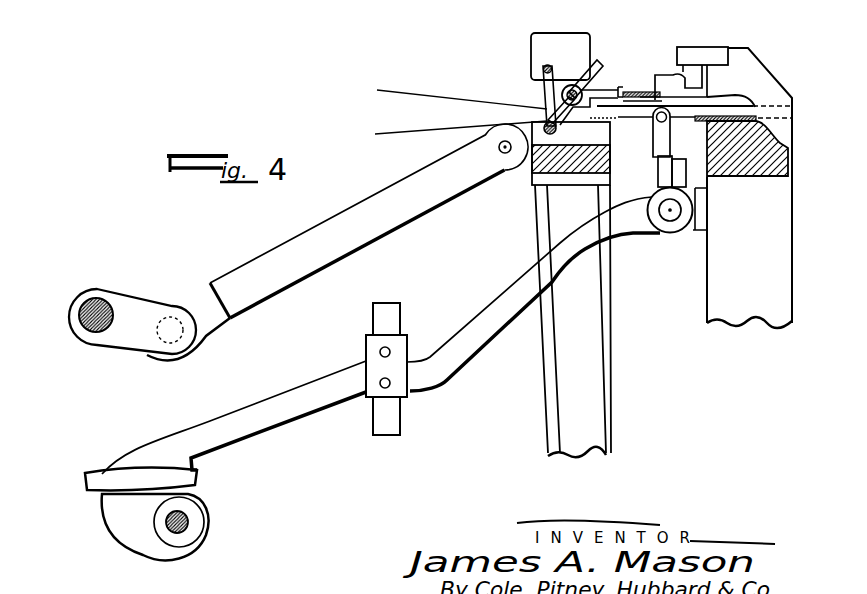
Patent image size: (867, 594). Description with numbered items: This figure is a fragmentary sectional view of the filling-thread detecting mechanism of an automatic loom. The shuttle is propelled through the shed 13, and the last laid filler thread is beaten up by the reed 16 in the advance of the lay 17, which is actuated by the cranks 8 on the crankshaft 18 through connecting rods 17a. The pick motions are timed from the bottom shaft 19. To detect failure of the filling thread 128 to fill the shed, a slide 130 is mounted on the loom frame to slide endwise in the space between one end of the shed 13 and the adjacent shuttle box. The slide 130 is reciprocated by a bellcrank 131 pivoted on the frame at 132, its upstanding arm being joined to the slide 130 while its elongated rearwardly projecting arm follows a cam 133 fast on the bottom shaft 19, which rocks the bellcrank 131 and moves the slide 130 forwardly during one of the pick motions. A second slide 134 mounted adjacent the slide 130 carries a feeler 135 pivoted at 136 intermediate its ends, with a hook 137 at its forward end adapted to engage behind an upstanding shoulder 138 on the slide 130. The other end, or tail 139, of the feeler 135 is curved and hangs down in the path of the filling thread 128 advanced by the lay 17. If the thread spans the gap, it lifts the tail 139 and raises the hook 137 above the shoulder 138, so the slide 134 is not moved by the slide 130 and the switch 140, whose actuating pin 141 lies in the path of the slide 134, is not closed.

The cranks 8 is at (142, 306).
The shed 13 is at (377, 124).
The reed 16 is at (545, 88).
The lay 17 is at (538, 211).
The connecting rods 17a is at (408, 218).
The crankshaft 18 is at (98, 333).
The bottom shaft 19 is at (190, 522).
The filling thread 128 is at (542, 123).
The slide 130 is at (637, 114).
The bellcrank 131 is at (634, 229).
The pivot 132 is at (671, 216).
The cam 133 is at (127, 535).
The second slide 134 is at (582, 111).
The feeler 135 is at (560, 56).
The pivot 136 is at (572, 85).
The hook 137 is at (601, 64).
The shoulder 138 is at (619, 91).
The tail 139 is at (555, 112).
The switch 140 is at (713, 50).
The actuating pin 141 is at (673, 83).